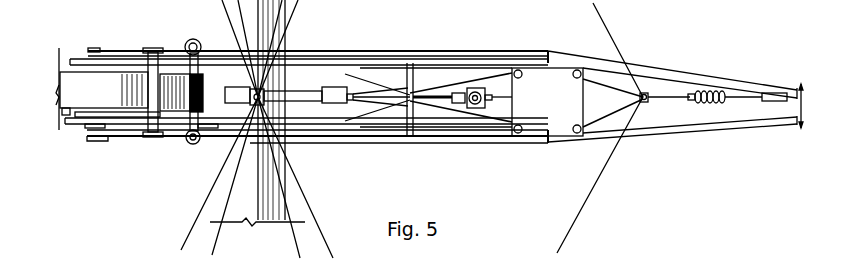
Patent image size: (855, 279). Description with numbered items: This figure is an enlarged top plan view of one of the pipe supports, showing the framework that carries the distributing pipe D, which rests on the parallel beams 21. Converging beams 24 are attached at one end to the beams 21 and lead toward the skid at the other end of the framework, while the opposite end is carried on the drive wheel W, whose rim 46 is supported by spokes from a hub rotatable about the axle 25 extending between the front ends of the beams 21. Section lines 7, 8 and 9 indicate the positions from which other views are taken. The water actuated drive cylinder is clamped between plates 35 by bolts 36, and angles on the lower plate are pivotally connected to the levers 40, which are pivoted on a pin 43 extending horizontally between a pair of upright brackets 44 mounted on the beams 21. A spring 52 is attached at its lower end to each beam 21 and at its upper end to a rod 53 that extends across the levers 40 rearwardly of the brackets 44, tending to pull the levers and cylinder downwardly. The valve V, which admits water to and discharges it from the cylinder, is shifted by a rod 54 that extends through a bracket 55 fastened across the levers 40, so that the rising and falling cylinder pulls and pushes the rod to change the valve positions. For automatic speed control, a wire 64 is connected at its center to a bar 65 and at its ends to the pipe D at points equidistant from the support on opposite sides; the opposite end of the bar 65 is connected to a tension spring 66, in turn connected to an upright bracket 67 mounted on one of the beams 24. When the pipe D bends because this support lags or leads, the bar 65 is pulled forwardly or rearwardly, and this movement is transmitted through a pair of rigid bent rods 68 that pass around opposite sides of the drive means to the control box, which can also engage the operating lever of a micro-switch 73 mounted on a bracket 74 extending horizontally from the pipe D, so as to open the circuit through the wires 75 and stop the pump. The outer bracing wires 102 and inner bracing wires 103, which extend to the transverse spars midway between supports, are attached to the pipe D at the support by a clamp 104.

The beams 21 is at (474, 56).
The converging beams 24 is at (682, 77).
The axle 25 is at (100, 66).
The plate 35 is at (561, 99).
The bolts 36 is at (521, 127).
The lever 40 is at (441, 68).
The pin 43 is at (153, 80).
The upright brackets 44 is at (155, 50).
The rim 46 is at (98, 99).
The spring 52 is at (192, 39).
The rod 53 is at (191, 56).
The rod 54 is at (408, 103).
The bracket 55 is at (408, 140).
The wire 64 is at (616, 44).
The bar 65 is at (652, 101).
The tension spring 66 is at (722, 92).
The upright bracket 67 is at (773, 97).
The rods 68 is at (434, 88).
The micro-switch 73 is at (330, 102).
The bracket 74 is at (330, 88).
The wires 75 is at (285, 99).
The outer wires 102 is at (295, 10).
The inner wires 103 is at (295, 226).
The clamp 104 is at (281, 91).
The section line 7 is at (60, 150).
The section line 8 is at (219, 110).
The section line 9 is at (433, 124).
The drive wheel W is at (56, 101).
The valve V is at (488, 93).
The distributing pipe D is at (259, 211).